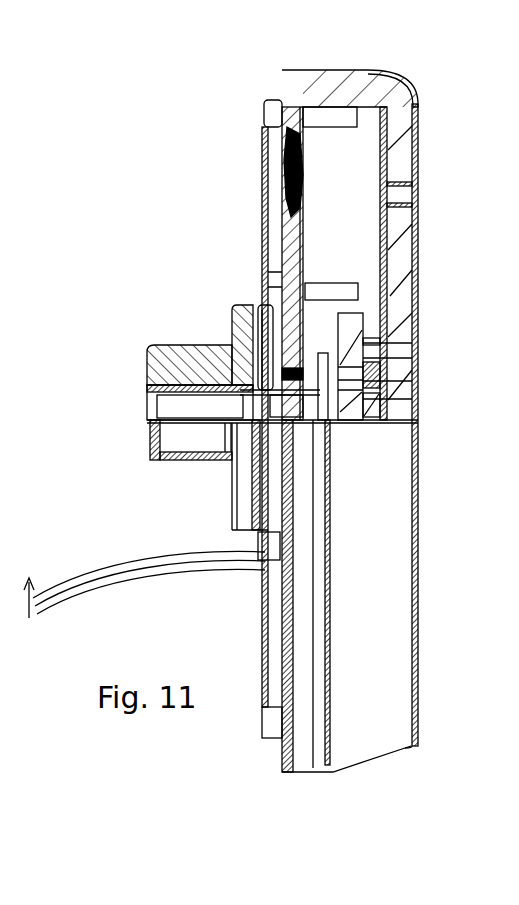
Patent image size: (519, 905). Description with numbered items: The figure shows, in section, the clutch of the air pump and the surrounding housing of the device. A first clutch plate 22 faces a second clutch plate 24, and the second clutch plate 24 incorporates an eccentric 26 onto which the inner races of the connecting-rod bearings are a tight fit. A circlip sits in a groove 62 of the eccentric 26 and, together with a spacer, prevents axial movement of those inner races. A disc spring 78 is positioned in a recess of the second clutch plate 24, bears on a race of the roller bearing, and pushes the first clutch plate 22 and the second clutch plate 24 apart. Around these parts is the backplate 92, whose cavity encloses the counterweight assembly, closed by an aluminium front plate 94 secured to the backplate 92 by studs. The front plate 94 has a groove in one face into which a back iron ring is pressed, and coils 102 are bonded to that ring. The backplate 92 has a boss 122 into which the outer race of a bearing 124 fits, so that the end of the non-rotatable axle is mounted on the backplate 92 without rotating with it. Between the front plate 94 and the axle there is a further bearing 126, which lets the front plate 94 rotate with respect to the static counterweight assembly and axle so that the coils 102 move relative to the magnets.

The first clutch plate 22 is at (358, 303).
The second clutch plate 24 is at (240, 305).
The eccentric 26 is at (193, 340).
The groove 62 is at (147, 352).
The disc spring 78 is at (148, 393).
The backplate 92 is at (390, 84).
The front plate 94 is at (282, 85).
The coils 102 is at (305, 177).
The boss 122 is at (388, 346).
The bearing 124 is at (388, 377).
The bearing 126 is at (388, 401).